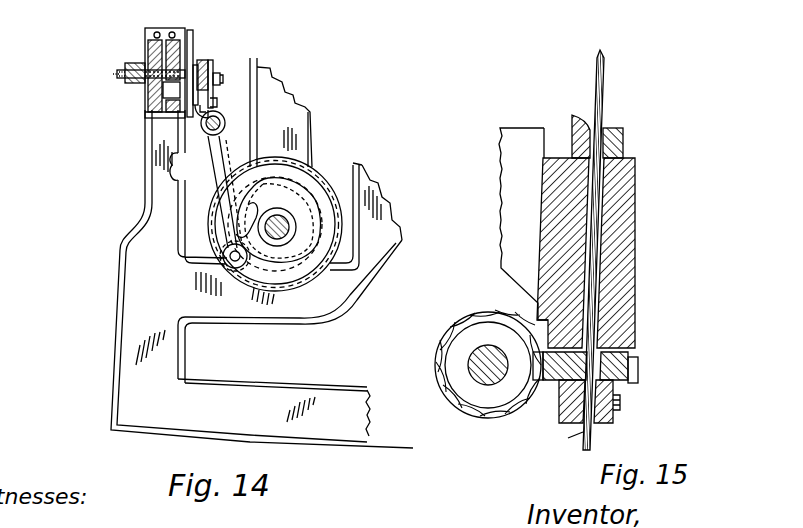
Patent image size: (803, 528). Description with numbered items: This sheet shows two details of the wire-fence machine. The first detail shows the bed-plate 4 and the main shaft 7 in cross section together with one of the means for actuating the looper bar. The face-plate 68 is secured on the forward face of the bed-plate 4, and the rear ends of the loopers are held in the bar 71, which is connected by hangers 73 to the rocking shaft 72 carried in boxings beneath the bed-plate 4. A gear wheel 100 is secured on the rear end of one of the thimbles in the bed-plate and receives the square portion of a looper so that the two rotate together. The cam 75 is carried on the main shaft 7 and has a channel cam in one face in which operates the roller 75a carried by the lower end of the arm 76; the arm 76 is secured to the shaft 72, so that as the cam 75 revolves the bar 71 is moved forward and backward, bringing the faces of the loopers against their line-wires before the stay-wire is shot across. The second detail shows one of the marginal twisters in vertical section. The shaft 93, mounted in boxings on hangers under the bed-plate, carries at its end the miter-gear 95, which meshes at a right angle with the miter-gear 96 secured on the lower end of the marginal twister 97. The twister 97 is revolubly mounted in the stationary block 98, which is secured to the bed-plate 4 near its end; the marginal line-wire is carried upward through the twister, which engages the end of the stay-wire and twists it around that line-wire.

In FIG. 14, the bed-plate 4 is at (150, 40).
In FIG. 14, the main shaft 7 is at (288, 220).
In FIG. 14, the face-plate 68 is at (145, 95).
In FIG. 14, the bar 71 is at (203, 60).
In FIG. 14, the rocking shaft 72 is at (227, 122).
In FIG. 14, the hangers 73 is at (215, 96).
In FIG. 14, the cam 75 is at (318, 273).
In FIG. 14, the roller 75a is at (240, 268).
In FIG. 14, the arm 76 is at (212, 172).
In FIG. 14, the gear wheel 100 is at (190, 45).
In FIG. 15, the shaft 93 is at (477, 350).
In FIG. 15, the miter-gear 95 is at (442, 343).
In FIG. 15, the miter-gear 96 is at (642, 367).
In FIG. 15, the marginal twister 97 is at (625, 139).
In FIG. 15, the stationary block 98 is at (502, 196).